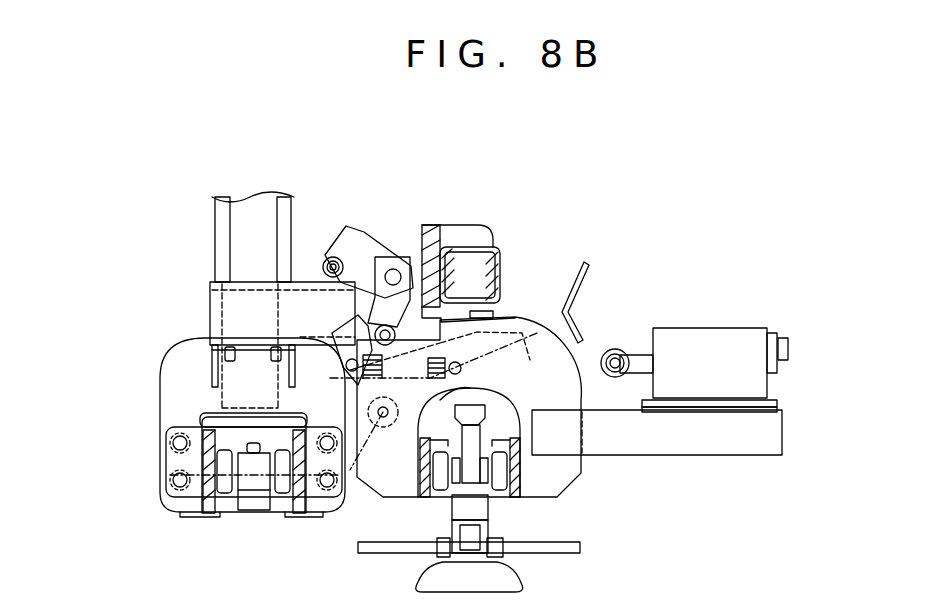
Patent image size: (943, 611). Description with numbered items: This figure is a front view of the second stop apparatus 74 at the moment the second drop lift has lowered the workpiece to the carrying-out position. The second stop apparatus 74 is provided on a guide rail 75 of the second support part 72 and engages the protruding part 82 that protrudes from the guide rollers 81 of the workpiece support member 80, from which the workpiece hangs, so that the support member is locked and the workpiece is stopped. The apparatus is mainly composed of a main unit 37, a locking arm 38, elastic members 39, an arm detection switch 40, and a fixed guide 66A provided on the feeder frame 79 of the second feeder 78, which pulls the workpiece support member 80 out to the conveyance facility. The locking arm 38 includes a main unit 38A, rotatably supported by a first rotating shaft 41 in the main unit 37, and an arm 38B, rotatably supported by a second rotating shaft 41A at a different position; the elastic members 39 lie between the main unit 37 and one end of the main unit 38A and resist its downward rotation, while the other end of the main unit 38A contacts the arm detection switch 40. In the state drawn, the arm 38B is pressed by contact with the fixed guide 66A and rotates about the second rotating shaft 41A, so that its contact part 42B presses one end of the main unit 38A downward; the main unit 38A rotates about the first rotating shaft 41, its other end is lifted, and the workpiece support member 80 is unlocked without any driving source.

The main unit 37 is at (578, 382).
The locking arm 38 is at (393, 148).
The main unit 38A is at (333, 337).
The arm 38B is at (350, 227).
The elastic member 39 is at (473, 387).
The arm detection switch 40 is at (713, 342).
The first rotating shaft 41 is at (383, 412).
The second rotating shaft 41A is at (393, 268).
The contact part 42B is at (448, 290).
The fixed guide 66A is at (213, 313).
The second support part 72 is at (500, 262).
The second stop apparatus 74 is at (588, 314).
The guide rail 75 is at (508, 483).
The second feeder 78 is at (166, 354).
The feeder frame 79 is at (182, 397).
The workpiece support member 80 is at (580, 548).
The guide roller 81 is at (440, 473).
The protruding part 82 is at (470, 415).